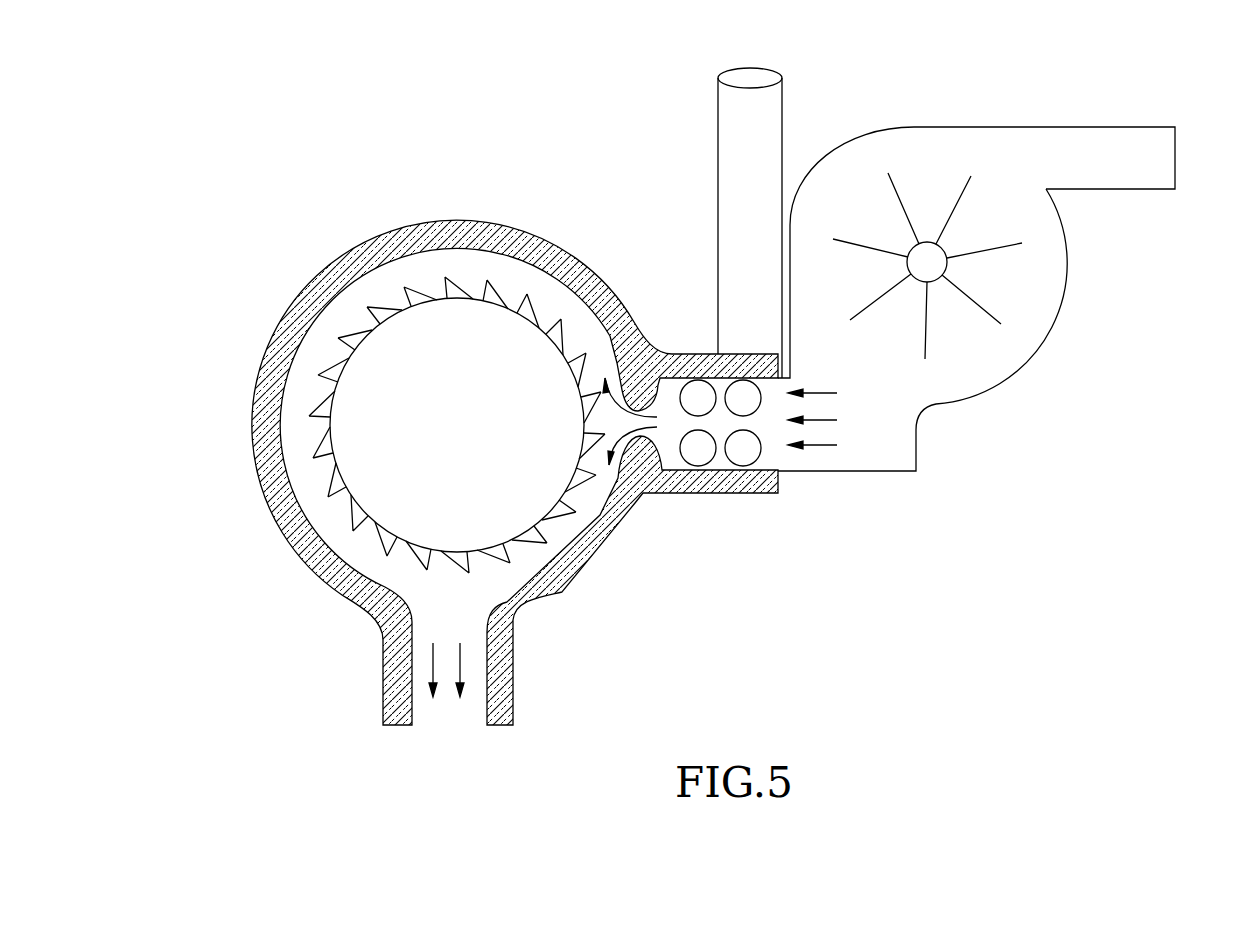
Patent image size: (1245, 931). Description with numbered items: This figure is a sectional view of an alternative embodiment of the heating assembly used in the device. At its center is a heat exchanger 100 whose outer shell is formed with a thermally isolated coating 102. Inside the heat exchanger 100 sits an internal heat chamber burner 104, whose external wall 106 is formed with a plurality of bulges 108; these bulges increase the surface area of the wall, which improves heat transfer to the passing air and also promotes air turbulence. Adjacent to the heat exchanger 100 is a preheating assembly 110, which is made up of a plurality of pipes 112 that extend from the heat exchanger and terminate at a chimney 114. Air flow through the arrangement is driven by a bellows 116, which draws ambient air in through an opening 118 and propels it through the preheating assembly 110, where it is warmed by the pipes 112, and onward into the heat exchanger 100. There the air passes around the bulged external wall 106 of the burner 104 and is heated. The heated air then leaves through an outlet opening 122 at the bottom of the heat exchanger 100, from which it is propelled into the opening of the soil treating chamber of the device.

The heat exchanger 100 is at (290, 248).
The thermally isolated coating 102 is at (387, 240).
The internal heat chamber burner 104 is at (457, 345).
The external wall 106 is at (515, 302).
The bulges 108 is at (557, 337).
The preheating assembly 110 is at (714, 466).
The pipes 112 is at (760, 452).
The chimney 114 is at (786, 120).
The bellows 116 is at (975, 364).
The opening 118 is at (1176, 162).
The outlet opening 122 is at (463, 702).